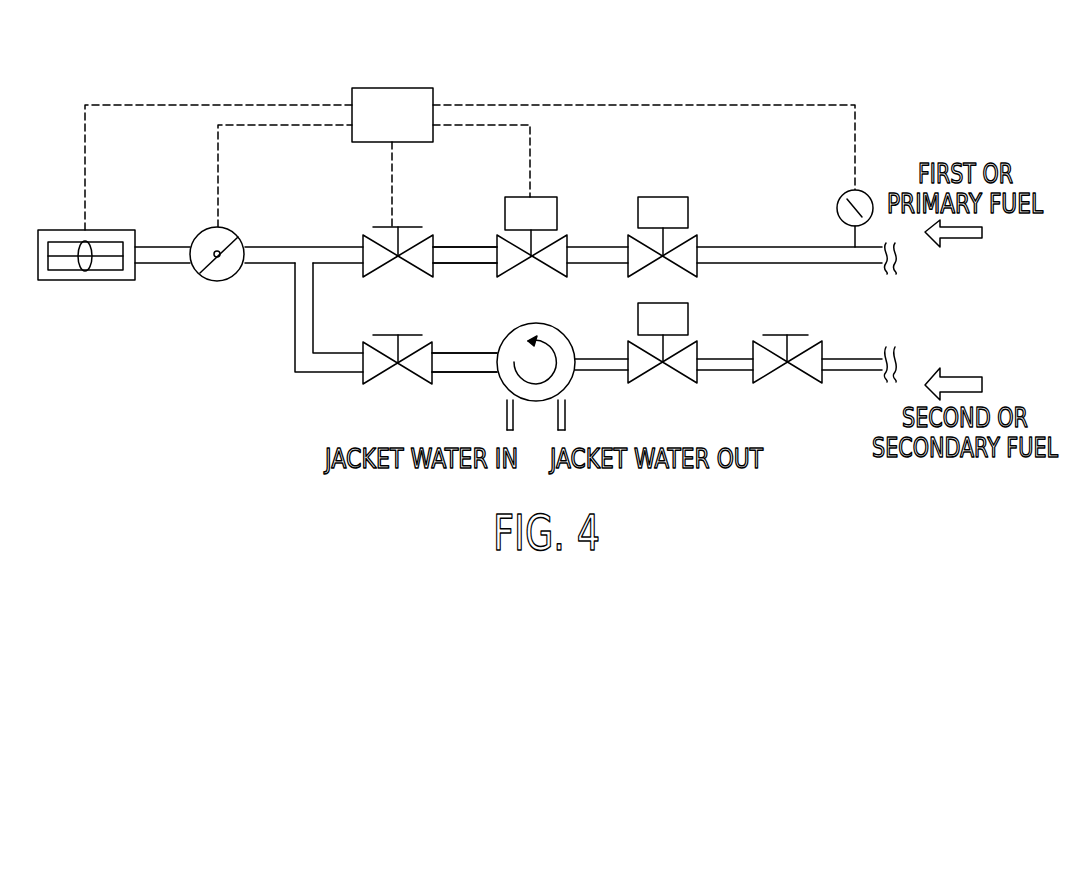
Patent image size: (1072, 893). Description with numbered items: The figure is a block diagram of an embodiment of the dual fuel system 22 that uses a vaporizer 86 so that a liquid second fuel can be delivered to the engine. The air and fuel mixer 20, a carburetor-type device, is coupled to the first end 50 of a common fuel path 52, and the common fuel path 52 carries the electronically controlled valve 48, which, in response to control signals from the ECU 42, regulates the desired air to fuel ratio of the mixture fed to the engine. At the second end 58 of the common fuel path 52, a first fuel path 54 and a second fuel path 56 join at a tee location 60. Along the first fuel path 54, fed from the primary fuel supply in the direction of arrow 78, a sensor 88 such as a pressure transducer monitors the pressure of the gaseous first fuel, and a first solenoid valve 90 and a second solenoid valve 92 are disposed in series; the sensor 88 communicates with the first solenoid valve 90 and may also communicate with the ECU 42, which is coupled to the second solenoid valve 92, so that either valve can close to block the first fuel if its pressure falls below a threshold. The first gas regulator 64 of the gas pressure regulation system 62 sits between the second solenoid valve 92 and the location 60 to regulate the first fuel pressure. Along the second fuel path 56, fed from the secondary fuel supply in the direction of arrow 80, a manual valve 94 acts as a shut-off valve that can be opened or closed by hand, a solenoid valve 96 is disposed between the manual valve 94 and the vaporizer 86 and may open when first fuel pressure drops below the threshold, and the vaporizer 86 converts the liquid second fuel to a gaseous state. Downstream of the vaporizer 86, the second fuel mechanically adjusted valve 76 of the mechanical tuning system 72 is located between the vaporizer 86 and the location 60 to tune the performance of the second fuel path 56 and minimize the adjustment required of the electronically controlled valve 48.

The air and fuel mixer 20 is at (85, 281).
The dual fuel system 22 is at (199, 128).
The ECU 42 is at (392, 88).
The electronically controlled valve 48 is at (205, 279).
The first end 50 is at (135, 263).
The common fuel path 52 is at (162, 247).
The first fuel path 54 is at (465, 264).
The second fuel path 56 is at (470, 373).
The second end 58 is at (305, 258).
The location 60 is at (338, 308).
The gas pressure regulation system 62 is at (453, 214).
The first gas regulator 64 is at (410, 265).
The mechanical tuning system 72 is at (353, 406).
The second fuel mechanically adjusted valve 76 is at (410, 372).
The arrow 78 is at (955, 239).
The arrow 80 is at (960, 376).
The vaporizer 86 is at (572, 380).
The sensor 88 is at (838, 208).
The first solenoid valve 90 is at (645, 268).
The second solenoid valve 92 is at (523, 265).
The manual valve 94 is at (770, 375).
The solenoid valve 96 is at (650, 372).